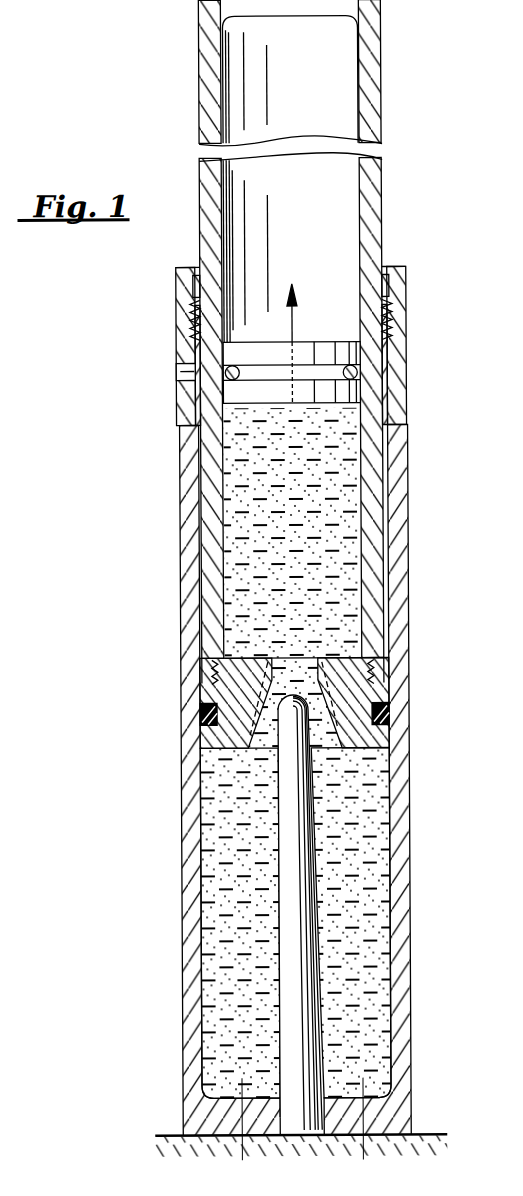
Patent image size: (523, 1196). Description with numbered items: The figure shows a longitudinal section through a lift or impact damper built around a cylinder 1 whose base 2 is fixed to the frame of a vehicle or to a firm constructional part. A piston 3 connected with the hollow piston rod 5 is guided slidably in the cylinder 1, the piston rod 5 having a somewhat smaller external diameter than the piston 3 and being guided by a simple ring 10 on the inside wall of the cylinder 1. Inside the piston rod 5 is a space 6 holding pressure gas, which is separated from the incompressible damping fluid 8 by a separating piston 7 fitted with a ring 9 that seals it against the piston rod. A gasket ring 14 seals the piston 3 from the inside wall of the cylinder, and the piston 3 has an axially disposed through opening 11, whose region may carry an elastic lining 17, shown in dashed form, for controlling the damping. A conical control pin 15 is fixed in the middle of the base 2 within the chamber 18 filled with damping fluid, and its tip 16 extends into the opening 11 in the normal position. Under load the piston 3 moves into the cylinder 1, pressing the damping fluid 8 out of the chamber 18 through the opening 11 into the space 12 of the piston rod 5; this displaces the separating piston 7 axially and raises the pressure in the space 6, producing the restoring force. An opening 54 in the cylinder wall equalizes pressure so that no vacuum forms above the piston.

The cylinder 1 is at (472, 525).
The base 2 is at (352, 1098).
The piston 3 is at (390, 738).
The piston rod 5 is at (376, 105).
The space 6 is at (312, 70).
The separating piston 7 is at (345, 393).
The damping fluid 8 is at (242, 535).
The ring 9 is at (356, 371).
The ring 10 is at (406, 287).
The through opening 11 is at (283, 693).
The space 12 is at (338, 498).
The gasket ring 14 is at (390, 713).
The control pin 15 is at (298, 958).
The tip 16 is at (296, 693).
The elastic lining 17 is at (340, 712).
The chamber 18 is at (373, 878).
The opening 54 is at (192, 372).